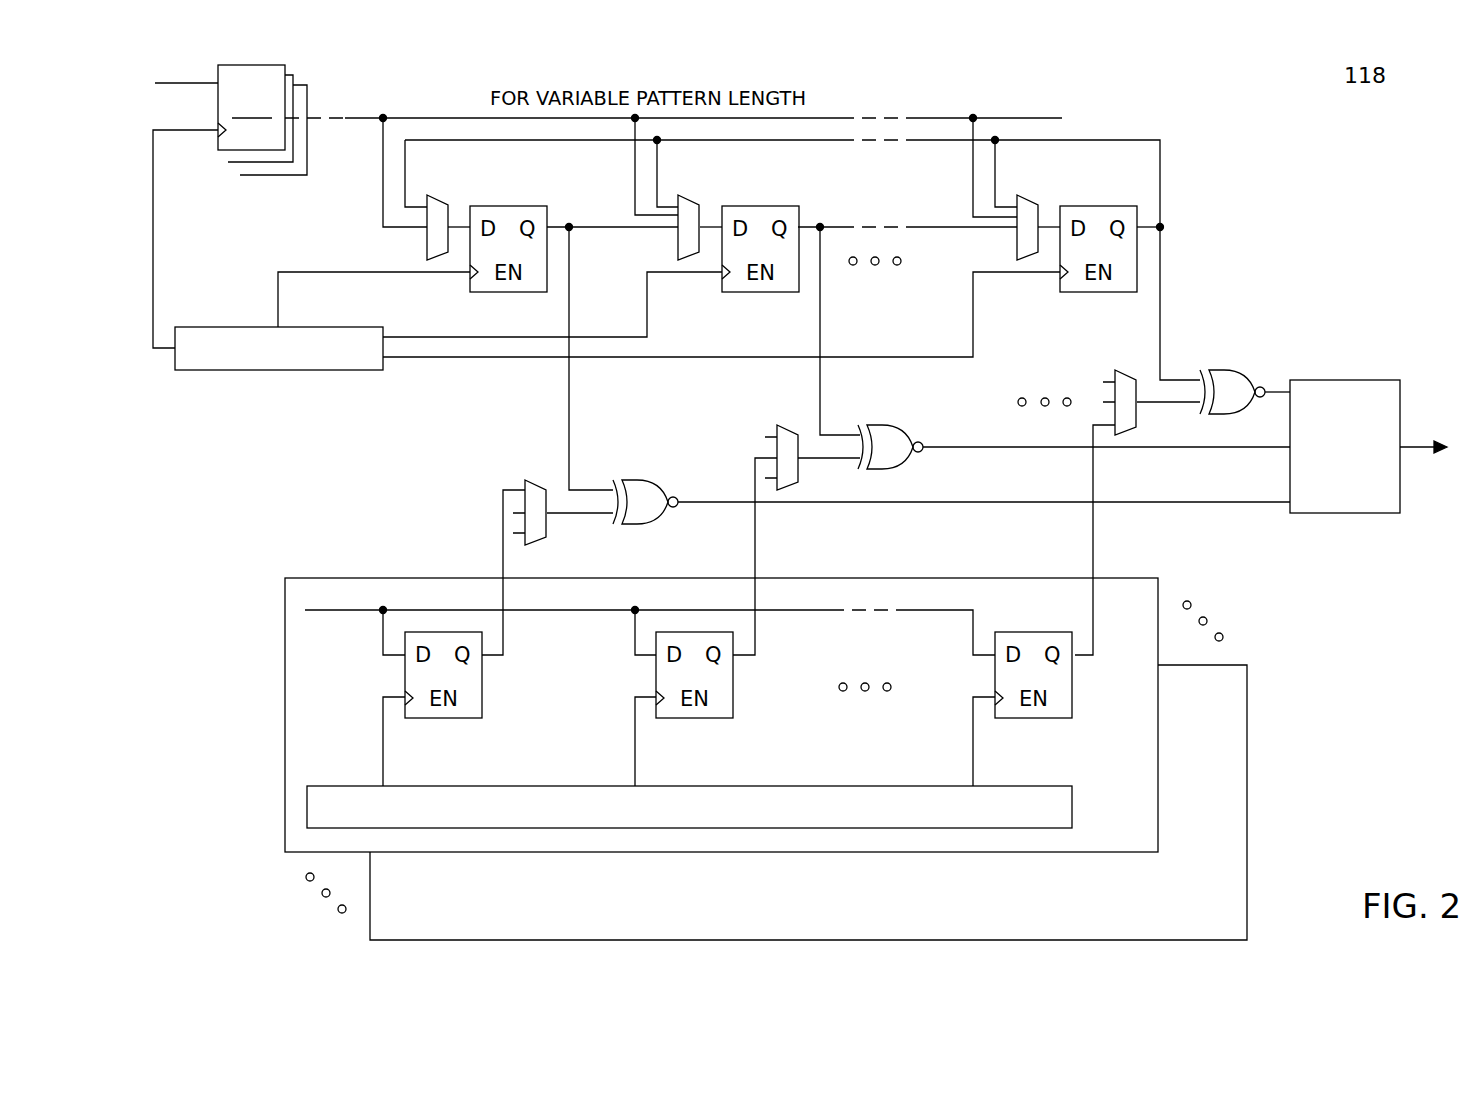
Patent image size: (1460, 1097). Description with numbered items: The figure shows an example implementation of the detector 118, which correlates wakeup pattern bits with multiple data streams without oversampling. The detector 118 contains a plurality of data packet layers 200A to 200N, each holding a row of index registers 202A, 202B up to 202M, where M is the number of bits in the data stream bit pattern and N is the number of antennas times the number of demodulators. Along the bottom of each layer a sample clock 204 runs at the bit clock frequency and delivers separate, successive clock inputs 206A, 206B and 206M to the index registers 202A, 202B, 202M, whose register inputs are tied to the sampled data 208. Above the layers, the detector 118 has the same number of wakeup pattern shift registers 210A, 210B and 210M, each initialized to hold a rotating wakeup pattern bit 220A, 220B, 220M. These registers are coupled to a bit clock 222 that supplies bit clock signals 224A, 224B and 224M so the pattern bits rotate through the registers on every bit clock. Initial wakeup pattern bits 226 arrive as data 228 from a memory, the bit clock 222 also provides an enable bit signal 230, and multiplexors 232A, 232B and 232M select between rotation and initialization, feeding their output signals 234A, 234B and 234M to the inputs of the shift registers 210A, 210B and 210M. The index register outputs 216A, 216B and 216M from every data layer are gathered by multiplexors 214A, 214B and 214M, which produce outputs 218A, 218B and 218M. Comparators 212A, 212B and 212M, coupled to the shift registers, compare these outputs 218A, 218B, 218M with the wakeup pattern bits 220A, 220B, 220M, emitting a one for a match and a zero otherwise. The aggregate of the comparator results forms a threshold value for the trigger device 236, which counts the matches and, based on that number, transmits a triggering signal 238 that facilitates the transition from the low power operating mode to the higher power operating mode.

The detector 118 is at (1368, 90).
The data packet layer 200A is at (286, 713).
The data packet layer 200N is at (1246, 790).
The index register 202A is at (440, 722).
The index register 202B is at (690, 720).
The index register 202M is at (1040, 720).
The sample clock 204 is at (1072, 810).
The clock input 206A is at (383, 740).
The clock input 206B is at (635, 740).
The clock input 206M is at (973, 740).
The data 208 is at (330, 612).
The wakeup pattern shift register 210A is at (508, 206).
The wakeup pattern shift register 210B is at (760, 206).
The wakeup pattern shift register 210M is at (1098, 206).
The comparator 212A is at (632, 480).
The comparator 212B is at (882, 425).
The comparator 212M is at (1220, 371).
The multiplexor 214A is at (537, 480).
The multiplexor 214B is at (788, 425).
The multiplexor 214M is at (1125, 370).
The output 216A is at (505, 633).
The output 216B is at (757, 633).
The output 216M is at (1093, 617).
The output 218A is at (583, 514).
The output 218B is at (832, 460).
The output 218M is at (1172, 402).
The wakeup pattern bit 220A is at (569, 327).
The wakeup pattern bit 220B is at (822, 327).
The wakeup pattern bit 220M is at (1160, 258).
The bit clock 222 is at (278, 370).
The bit clock signal 224A is at (278, 300).
The bit clock signal 224B is at (647, 302).
The bit clock signal 224M is at (974, 313).
The initial wakeup pattern bits 226 is at (262, 120).
The data 228 is at (172, 83).
The enable bit signal 230 is at (153, 240).
The multiplexor 232A is at (427, 237).
The multiplexor 232B is at (678, 237).
The multiplexor 232M is at (1017, 237).
The output signal 234A is at (460, 222).
The output signal 234B is at (712, 222).
The output signal 234M is at (1050, 222).
The trigger device 236 is at (1345, 380).
The triggering signal 238 is at (1422, 442).